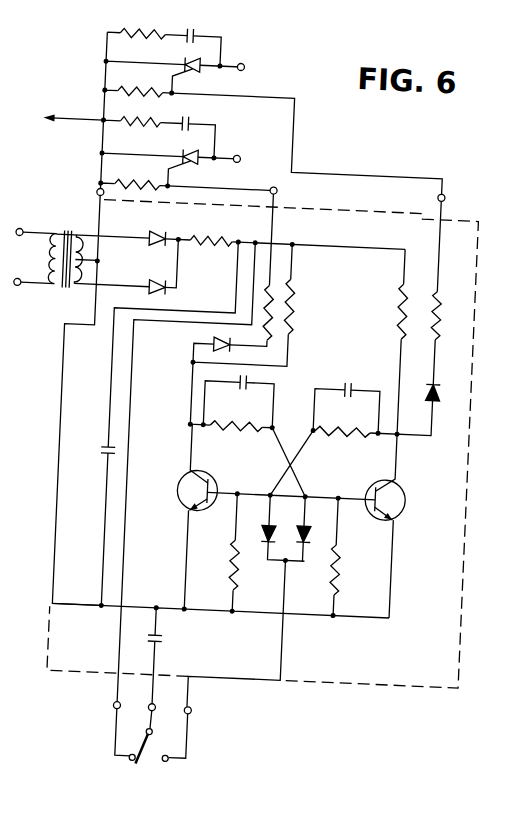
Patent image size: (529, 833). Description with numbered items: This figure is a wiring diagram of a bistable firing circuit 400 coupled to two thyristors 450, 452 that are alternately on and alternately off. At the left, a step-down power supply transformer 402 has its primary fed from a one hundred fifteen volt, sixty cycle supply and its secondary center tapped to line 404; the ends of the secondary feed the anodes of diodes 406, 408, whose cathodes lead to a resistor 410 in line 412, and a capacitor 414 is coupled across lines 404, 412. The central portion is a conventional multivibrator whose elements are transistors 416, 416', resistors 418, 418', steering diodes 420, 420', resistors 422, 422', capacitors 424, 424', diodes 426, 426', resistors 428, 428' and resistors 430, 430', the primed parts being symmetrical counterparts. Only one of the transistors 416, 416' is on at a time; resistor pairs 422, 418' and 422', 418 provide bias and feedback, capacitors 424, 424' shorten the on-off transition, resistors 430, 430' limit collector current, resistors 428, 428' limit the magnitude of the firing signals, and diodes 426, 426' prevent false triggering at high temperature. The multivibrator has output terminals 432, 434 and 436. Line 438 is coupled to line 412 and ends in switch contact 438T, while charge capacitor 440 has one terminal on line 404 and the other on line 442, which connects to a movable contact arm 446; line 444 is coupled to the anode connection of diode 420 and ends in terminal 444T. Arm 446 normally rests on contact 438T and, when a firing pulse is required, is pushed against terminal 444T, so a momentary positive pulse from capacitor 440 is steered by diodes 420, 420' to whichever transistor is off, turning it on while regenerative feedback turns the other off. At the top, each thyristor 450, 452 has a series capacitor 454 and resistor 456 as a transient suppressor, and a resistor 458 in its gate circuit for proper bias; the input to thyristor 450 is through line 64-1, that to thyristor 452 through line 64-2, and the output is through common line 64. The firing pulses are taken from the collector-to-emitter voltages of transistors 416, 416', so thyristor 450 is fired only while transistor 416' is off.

The bistable firing circuit 400 is at (328, 144).
The step-down power supply transformer 402 is at (66, 287).
The line 404 is at (115, 603).
The diode 406 is at (153, 281).
The diode 408 is at (155, 229).
The resistor 410 is at (227, 229).
The line 412 is at (359, 236).
The capacitor 414 is at (111, 450).
The transistor 416 is at (183, 489).
The transistor 416' is at (405, 500).
The resistor 418 is at (251, 569).
The resistor 418' is at (353, 573).
The steering diode 420 is at (259, 525).
The steering diode 420' is at (318, 525).
The resistor 422 is at (235, 439).
The resistor 422' is at (342, 444).
The capacitor 424 is at (264, 379).
The capacitor 424' is at (370, 386).
The diode 426 is at (198, 342).
The diode 426' is at (447, 394).
The resistor 428 is at (296, 300).
The resistor 428' is at (454, 299).
The resistor 430 is at (310, 307).
The resistor 430' is at (386, 341).
The output terminal 432 is at (97, 190).
The output terminal 434 is at (277, 184).
The output terminal 436 is at (445, 184).
The line 438 is at (139, 650).
The switch contact 438T is at (151, 756).
The capacitor 440 is at (180, 642).
The line 442 is at (177, 703).
The line 444 is at (301, 645).
The terminal 444T is at (190, 761).
The movable contact arm 446 is at (189, 742).
The thyristor 450 is at (195, 72).
The thyristor 452 is at (193, 164).
The capacitor 454 is at (187, 27).
The resistor 456 is at (130, 27).
The resistor 458 is at (149, 80).
The common line 64 is at (82, 118).
The line 64-1 is at (235, 57).
The line 64-2 is at (235, 152).